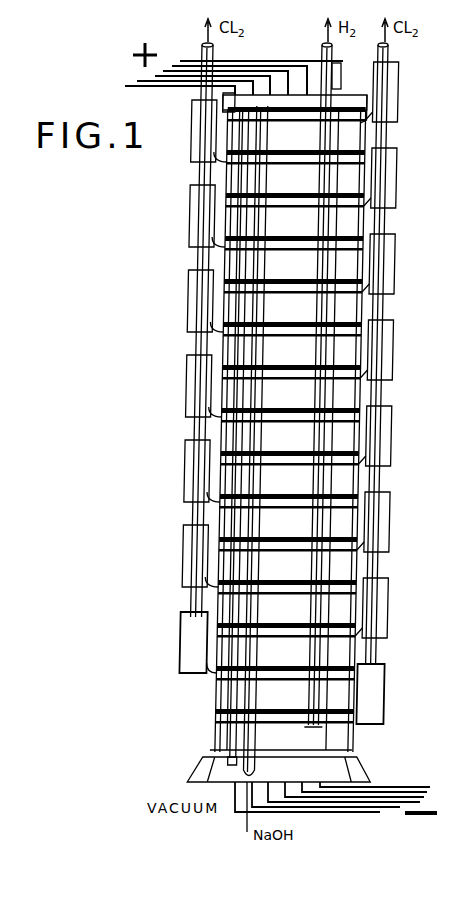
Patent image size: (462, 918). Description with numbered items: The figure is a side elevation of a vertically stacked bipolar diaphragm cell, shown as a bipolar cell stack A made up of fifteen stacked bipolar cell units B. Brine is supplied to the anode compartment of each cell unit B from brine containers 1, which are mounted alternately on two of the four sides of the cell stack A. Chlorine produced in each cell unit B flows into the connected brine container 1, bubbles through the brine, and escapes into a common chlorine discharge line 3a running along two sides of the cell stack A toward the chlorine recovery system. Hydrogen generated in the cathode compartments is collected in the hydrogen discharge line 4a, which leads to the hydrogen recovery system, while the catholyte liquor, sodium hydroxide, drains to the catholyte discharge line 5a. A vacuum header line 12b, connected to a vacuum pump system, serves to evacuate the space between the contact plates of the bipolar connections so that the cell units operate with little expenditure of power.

The brine container 1 is at (194, 137).
The chlorine discharge line 3a is at (197, 437).
The hydrogen discharge line 4a is at (322, 428).
The catholyte discharge line 5a is at (260, 270).
The vacuum header line 12b is at (230, 696).
The bipolar cell unit B is at (348, 179).
The bipolar cell stack A is at (296, 50).